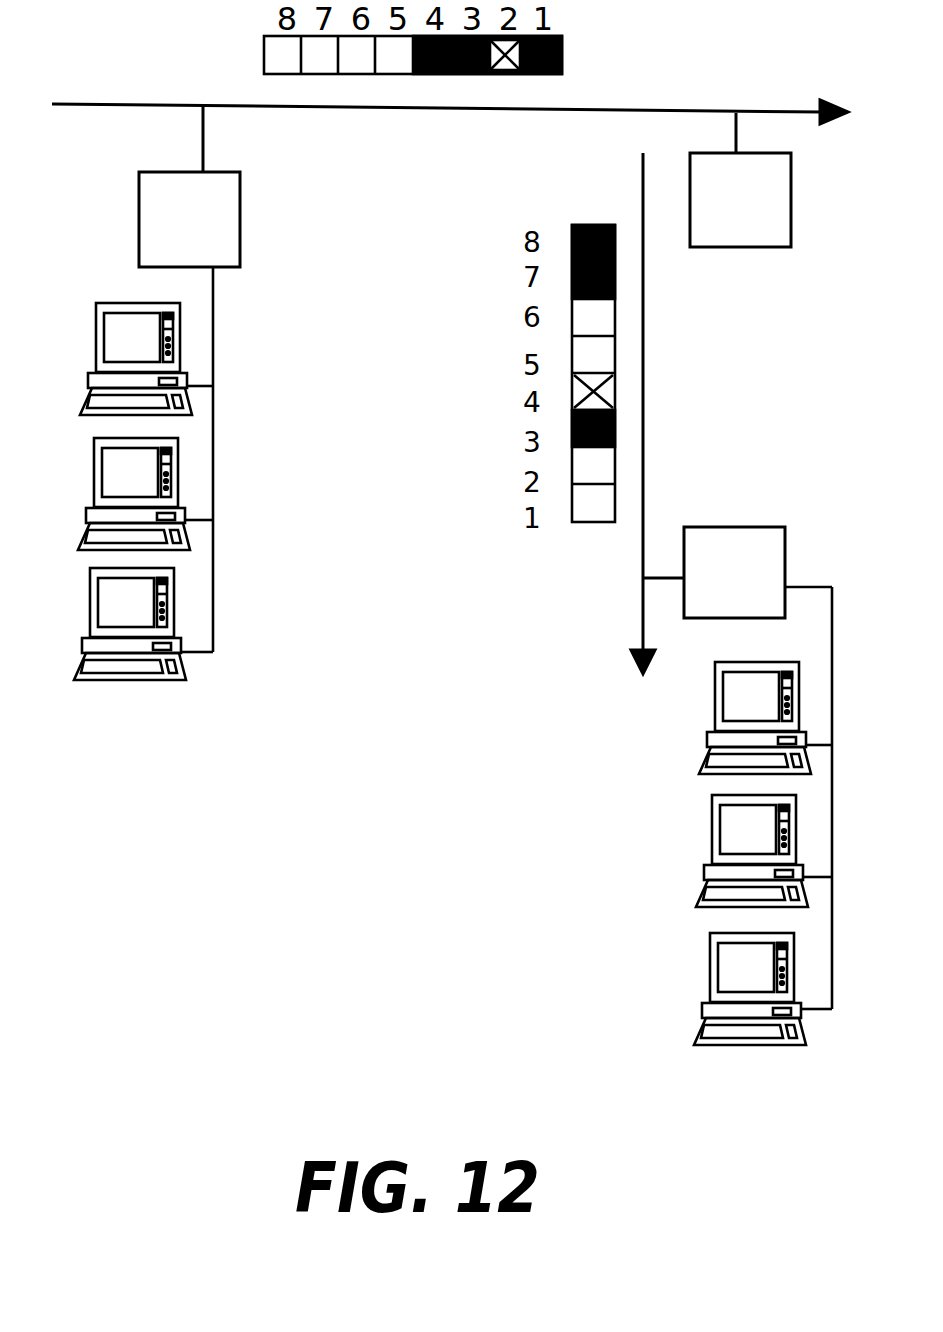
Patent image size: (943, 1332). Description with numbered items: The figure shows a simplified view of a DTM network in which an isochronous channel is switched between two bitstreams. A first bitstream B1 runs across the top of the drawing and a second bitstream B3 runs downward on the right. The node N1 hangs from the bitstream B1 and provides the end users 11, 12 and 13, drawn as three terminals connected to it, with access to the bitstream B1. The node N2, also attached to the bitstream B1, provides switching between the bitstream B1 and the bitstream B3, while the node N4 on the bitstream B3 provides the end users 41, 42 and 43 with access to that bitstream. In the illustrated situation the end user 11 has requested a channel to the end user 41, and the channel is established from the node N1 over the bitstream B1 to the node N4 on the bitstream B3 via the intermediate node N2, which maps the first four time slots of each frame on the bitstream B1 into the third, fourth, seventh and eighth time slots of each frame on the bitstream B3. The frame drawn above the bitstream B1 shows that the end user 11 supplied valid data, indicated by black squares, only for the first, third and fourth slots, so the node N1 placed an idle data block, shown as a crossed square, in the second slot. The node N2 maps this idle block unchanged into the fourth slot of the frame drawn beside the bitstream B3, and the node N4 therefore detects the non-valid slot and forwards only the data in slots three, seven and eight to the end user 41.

The end user 11 is at (112, 372).
The end user 12 is at (114, 490).
The end user 13 is at (130, 620).
The end user 41 is at (737, 717).
The end user 42 is at (730, 848).
The end user 43 is at (742, 968).
The node N1 is at (170, 237).
The intermediate node N2 is at (723, 210).
The node N4 is at (735, 560).
The bitstream B1 is at (450, 81).
The bitstream B3 is at (596, 440).